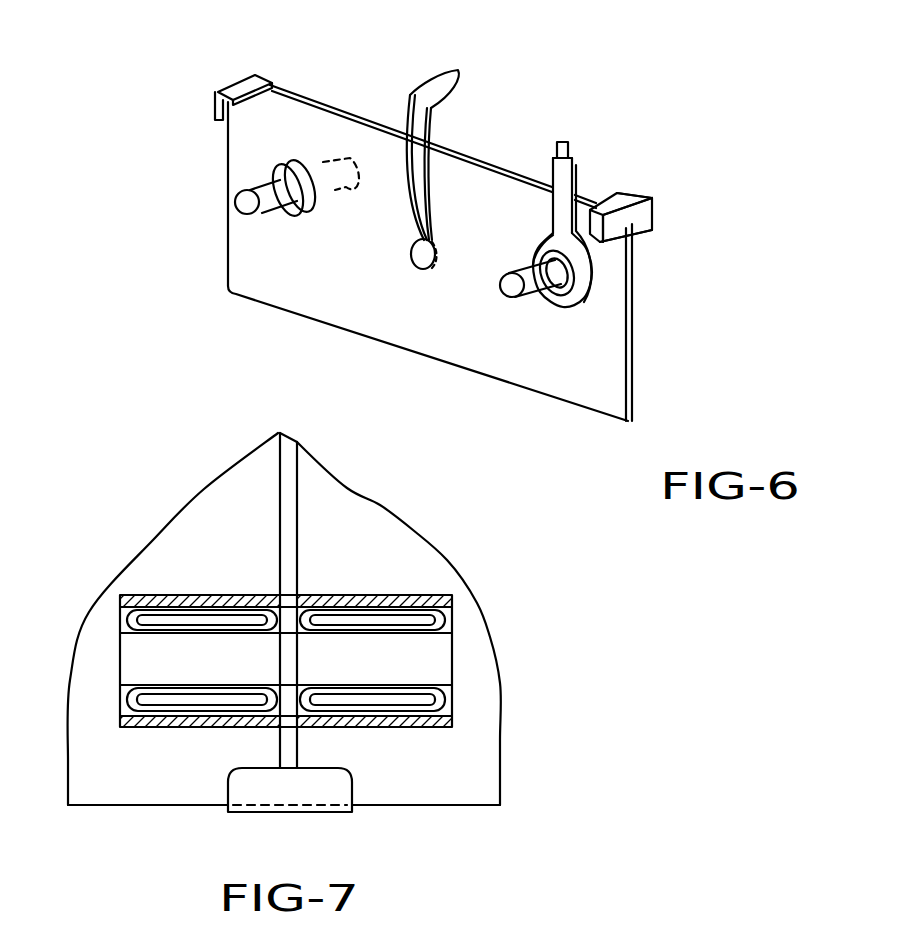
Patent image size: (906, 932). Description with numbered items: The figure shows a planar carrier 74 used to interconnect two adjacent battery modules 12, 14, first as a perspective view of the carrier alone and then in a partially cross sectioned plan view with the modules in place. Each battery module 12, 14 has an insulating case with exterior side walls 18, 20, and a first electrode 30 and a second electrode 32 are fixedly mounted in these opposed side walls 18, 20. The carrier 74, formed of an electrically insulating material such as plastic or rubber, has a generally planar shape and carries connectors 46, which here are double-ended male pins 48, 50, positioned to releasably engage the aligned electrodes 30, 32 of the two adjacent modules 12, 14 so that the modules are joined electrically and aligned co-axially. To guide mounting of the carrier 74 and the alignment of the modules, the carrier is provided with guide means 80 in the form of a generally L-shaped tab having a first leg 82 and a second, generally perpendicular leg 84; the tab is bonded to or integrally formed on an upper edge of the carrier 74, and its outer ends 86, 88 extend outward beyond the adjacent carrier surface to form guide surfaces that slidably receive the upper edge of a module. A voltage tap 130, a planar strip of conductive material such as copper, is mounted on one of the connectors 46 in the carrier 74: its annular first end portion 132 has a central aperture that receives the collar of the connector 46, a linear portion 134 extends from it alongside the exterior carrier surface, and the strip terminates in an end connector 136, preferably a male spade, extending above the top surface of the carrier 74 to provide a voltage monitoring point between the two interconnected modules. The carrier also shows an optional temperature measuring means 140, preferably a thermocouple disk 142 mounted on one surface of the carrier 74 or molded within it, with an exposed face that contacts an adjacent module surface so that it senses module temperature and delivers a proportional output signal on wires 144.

In FIG. 7, the battery module 12 is at (158, 556).
In FIG. 7, the battery module 14 is at (443, 583).
In FIG. 7, the side wall 18 is at (293, 492).
In FIG. 7, the side wall 20 is at (282, 520).
In FIG. 7, the first electrode 30 is at (393, 728).
In FIG. 7, the second electrode 32 is at (163, 729).
In FIG. 6, the connector 46 is at (282, 183).
In FIG. 7, the connector 46 is at (383, 664).
In FIG. 6, the double-ended male pin 48 is at (250, 196).
In FIG. 7, the double-ended male pin 48 is at (139, 657).
In FIG. 6, the double-ended male pin 50 is at (323, 170).
In FIG. 7, the double-ended male pin 50 is at (445, 665).
In FIG. 6, the carrier 74 is at (397, 88).
In FIG. 7, the carrier 74 is at (291, 550).
In FIG. 6, the guide means 80 is at (231, 89).
In FIG. 7, the guide means 80 is at (329, 814).
In FIG. 6, the first leg 82 is at (635, 198).
In FIG. 6, the second leg 84 is at (655, 222).
In FIG. 6, the outer end 86 is at (640, 238).
In FIG. 6, the outer end 88 is at (655, 210).
In FIG. 6, the voltage tap 130 is at (549, 147).
In FIG. 6, the annular first end portion 132 is at (581, 299).
In FIG. 6, the linear portion 134 is at (560, 203).
In FIG. 6, the end connector 136 is at (566, 148).
In FIG. 6, the temperature measuring means 140 is at (419, 278).
In FIG. 6, the thermocouple disk 142 is at (412, 252).
In FIG. 6, the wires 144 is at (458, 78).